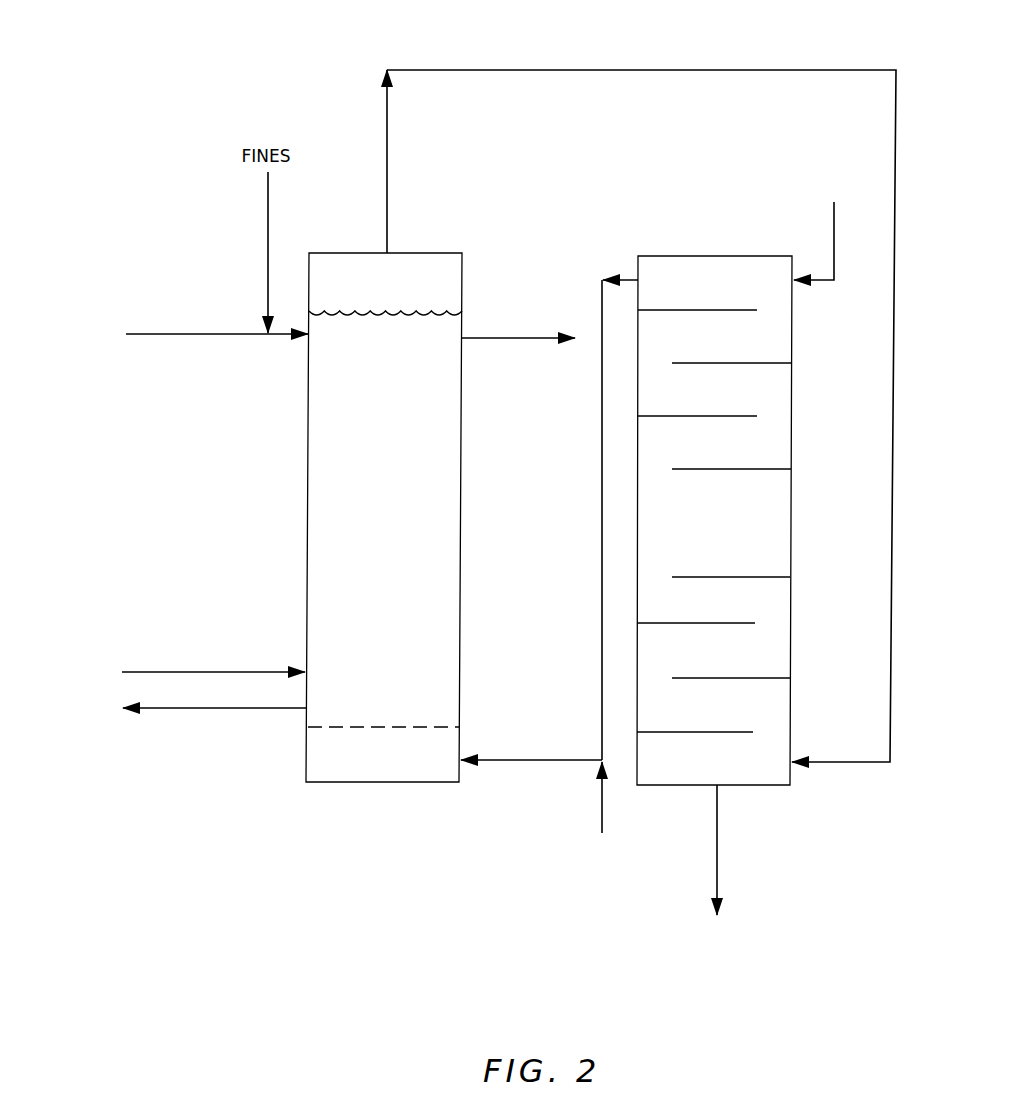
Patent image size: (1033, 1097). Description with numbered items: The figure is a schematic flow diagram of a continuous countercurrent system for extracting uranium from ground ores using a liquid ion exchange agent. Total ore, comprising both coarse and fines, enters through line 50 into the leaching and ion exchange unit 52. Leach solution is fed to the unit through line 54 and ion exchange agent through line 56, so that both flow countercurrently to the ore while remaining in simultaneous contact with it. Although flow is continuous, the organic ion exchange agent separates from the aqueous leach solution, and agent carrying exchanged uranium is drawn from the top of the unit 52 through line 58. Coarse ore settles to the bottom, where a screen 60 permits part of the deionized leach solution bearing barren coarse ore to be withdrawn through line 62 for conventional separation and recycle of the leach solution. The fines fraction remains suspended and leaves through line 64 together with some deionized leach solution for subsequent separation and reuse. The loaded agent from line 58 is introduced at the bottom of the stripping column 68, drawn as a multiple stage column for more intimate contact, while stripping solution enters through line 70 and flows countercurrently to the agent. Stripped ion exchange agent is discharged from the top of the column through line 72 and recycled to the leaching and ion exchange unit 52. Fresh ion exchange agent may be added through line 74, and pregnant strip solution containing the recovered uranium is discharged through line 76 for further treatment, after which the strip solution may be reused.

The line 50 is at (248, 336).
The leaching and ion exchange unit 52 is at (308, 449).
The line 54 is at (268, 672).
The line 56 is at (531, 759).
The line 58 is at (494, 67).
The screen 60 is at (367, 727).
The line 62 is at (272, 710).
The line 64 is at (541, 341).
The stripping column 68 is at (792, 430).
The line 70 is at (832, 222).
The line 72 is at (601, 588).
The line 74 is at (598, 797).
The line 76 is at (719, 856).